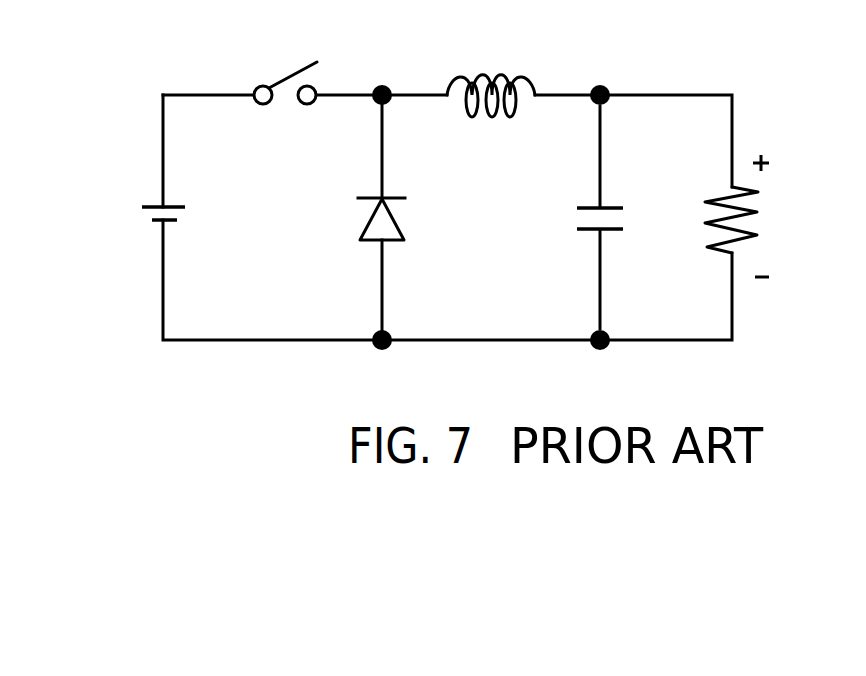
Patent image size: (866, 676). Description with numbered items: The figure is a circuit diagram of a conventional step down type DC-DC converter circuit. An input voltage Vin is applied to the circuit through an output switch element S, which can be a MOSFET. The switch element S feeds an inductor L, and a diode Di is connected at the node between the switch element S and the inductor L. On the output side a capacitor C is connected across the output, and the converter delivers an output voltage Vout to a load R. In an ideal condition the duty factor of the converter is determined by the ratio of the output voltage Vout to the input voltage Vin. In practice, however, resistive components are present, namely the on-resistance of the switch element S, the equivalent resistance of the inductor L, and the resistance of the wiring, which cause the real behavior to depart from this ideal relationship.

The output switch element S is at (285, 69).
The input voltage Vin is at (191, 214).
The diode Di is at (364, 217).
The inductor L is at (491, 77).
The capacitor C is at (584, 217).
The load R is at (717, 220).
The output voltage Vout is at (792, 216).